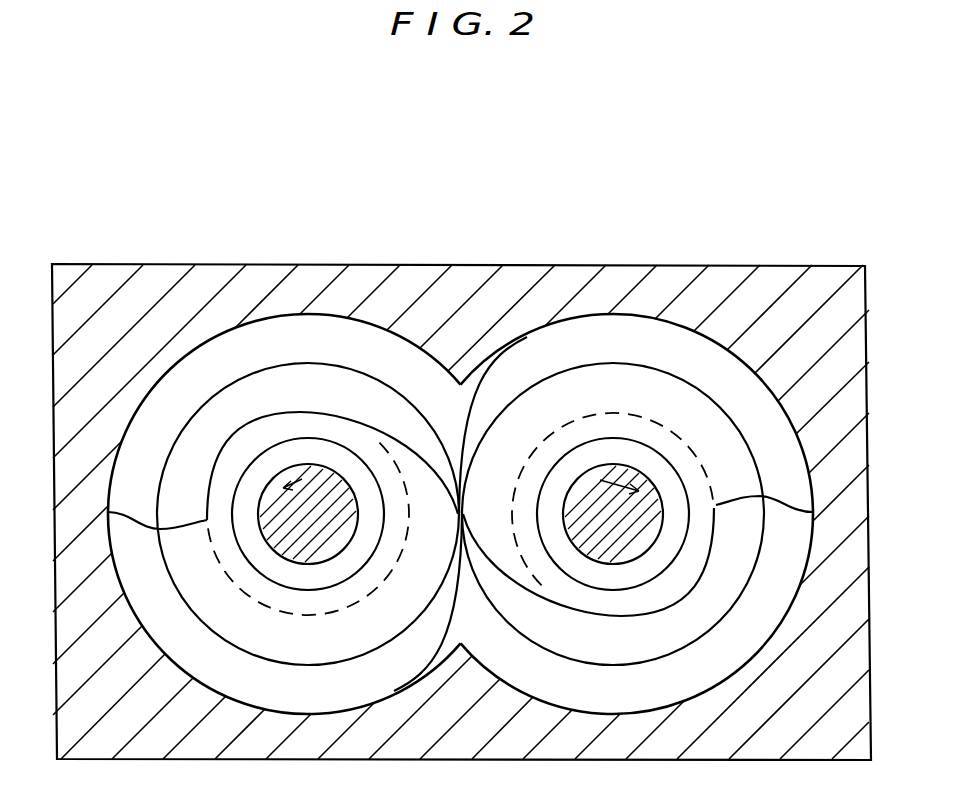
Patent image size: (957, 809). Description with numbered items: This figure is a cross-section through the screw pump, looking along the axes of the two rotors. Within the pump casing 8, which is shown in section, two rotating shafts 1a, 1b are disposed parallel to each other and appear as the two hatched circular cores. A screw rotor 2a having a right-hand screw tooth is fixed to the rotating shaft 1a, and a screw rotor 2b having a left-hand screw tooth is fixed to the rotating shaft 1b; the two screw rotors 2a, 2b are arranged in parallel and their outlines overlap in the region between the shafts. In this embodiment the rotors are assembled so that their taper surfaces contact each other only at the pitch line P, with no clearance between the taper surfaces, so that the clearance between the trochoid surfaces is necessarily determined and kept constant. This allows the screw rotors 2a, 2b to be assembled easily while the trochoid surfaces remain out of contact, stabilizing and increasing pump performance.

The pump casing 8 is at (416, 292).
The screw rotor 2a is at (243, 447).
The screw rotor 2b is at (662, 346).
The rotating shaft 1a is at (330, 468).
The rotating shaft 1b is at (578, 489).
The pitch line P is at (296, 366).